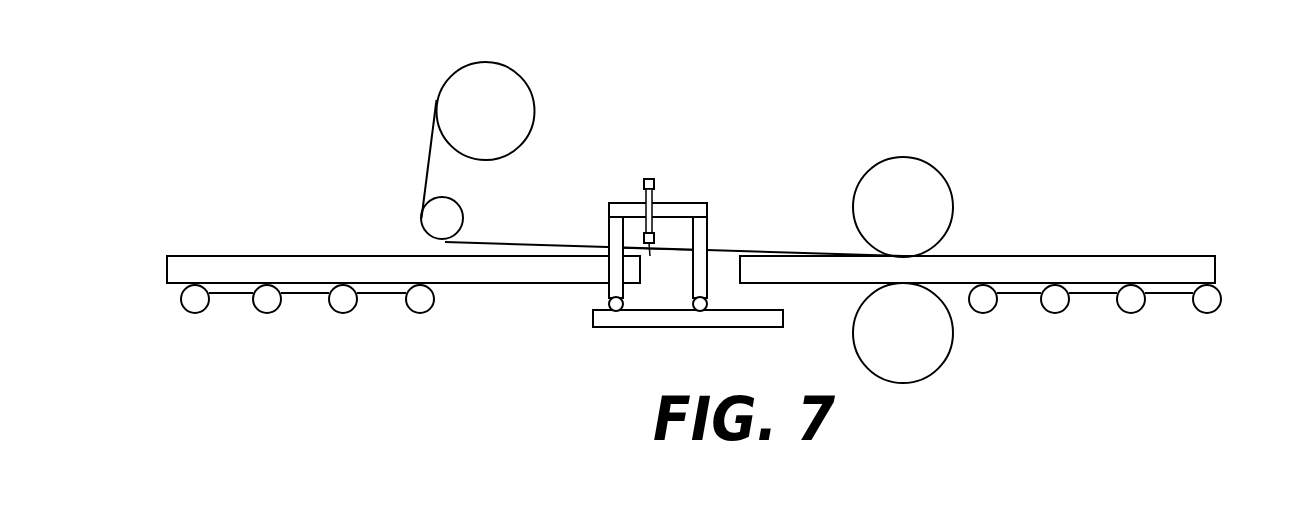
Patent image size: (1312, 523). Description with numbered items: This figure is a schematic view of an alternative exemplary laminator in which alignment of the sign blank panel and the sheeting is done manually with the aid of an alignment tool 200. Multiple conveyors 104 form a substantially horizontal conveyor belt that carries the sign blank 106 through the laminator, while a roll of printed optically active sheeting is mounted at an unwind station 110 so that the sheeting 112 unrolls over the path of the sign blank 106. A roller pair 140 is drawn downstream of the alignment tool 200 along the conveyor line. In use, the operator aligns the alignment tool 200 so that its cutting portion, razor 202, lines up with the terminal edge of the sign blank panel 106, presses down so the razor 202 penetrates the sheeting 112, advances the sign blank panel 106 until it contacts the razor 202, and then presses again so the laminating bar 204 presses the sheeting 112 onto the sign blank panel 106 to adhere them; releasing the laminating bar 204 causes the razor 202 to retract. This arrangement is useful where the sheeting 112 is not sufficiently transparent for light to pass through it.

The conveyors 104 is at (267, 313).
The sign blank 106 is at (378, 272).
The unwind station 110 is at (472, 62).
The sheeting 112 is at (541, 243).
The nip rollers 140 is at (937, 172).
The alignment tool 200 is at (684, 143).
The razor 202 is at (652, 252).
The laminating bar 204 is at (633, 233).